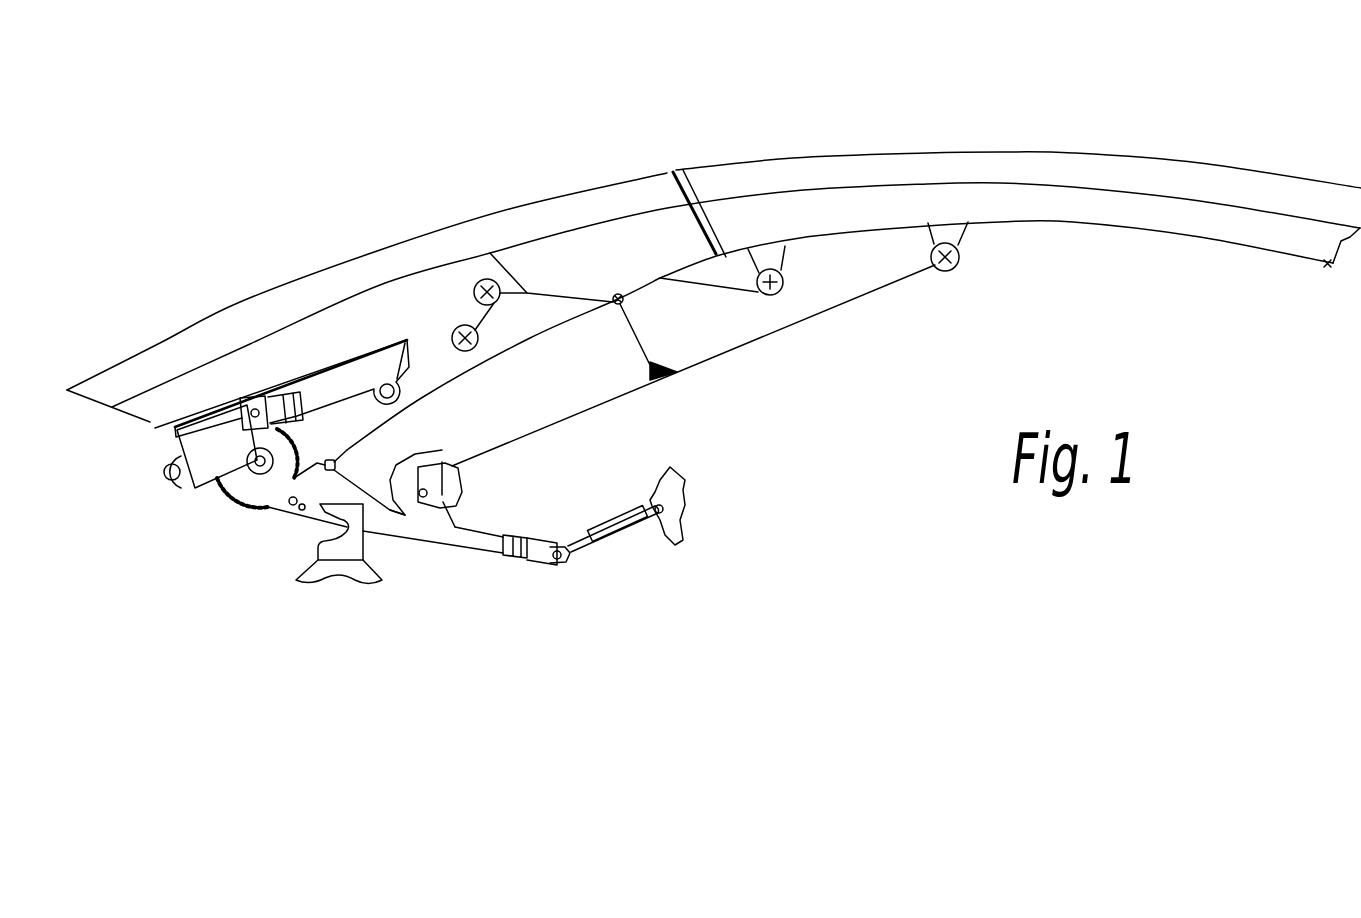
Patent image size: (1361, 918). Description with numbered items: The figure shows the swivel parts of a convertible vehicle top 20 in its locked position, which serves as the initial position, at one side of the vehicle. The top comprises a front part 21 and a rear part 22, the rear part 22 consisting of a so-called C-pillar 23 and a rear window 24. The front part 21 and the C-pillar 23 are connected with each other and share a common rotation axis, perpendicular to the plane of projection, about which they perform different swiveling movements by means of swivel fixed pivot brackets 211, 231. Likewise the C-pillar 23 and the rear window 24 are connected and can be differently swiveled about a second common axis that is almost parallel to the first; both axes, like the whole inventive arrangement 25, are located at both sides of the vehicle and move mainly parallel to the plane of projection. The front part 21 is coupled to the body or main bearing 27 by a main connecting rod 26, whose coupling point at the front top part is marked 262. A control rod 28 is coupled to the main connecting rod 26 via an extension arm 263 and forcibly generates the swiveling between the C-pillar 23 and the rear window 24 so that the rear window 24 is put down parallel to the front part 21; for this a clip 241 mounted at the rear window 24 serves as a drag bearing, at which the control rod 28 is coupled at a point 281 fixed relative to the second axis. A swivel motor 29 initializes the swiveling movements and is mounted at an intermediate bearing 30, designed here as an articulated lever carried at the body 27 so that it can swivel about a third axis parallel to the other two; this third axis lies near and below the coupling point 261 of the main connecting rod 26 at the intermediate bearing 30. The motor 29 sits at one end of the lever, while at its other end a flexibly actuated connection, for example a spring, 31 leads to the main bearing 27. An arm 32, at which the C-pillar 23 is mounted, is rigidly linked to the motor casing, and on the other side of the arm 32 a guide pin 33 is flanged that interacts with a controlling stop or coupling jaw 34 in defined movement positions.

The convertible vehicle top 20 is at (672, 140).
The front part 21 is at (967, 163).
The swivel fixed pivot bracket 211 is at (787, 259).
The rear part 22 is at (322, 222).
The C-pillar 23 is at (588, 253).
The swivel fixed pivot bracket 231 is at (723, 273).
The rear window 24 is at (432, 237).
The clip 241 is at (457, 327).
The inventive arrangement 25 is at (417, 560).
The main connecting rod 26 is at (837, 305).
The coupling point 261 is at (444, 461).
The coupling point 262 is at (957, 259).
The extension arm 263 is at (632, 322).
The body (main bearing) 27 is at (317, 578).
The control rod 28 is at (530, 293).
The coupling point 281 is at (485, 282).
The swivel motor 29 is at (228, 498).
The intermediate bearing 30 is at (470, 543).
The flexibly actuated connection (spring) 31 is at (623, 537).
The arm 32 is at (310, 380).
The guide pin 33 is at (170, 480).
The controlling stop (coupling jaw) 34 is at (327, 548).